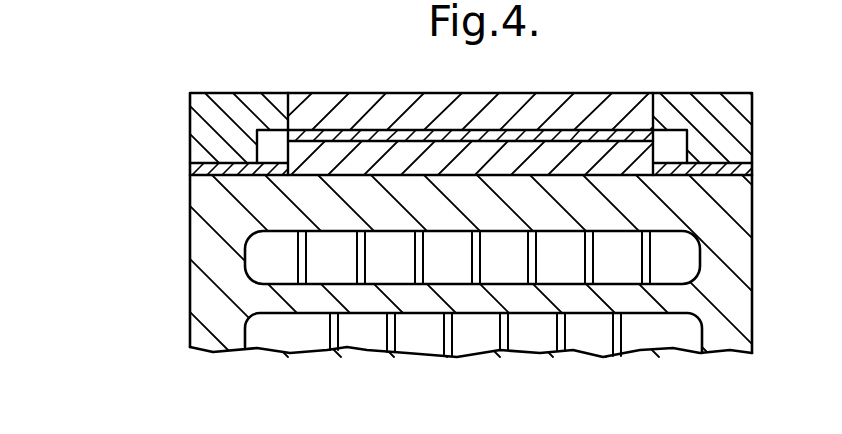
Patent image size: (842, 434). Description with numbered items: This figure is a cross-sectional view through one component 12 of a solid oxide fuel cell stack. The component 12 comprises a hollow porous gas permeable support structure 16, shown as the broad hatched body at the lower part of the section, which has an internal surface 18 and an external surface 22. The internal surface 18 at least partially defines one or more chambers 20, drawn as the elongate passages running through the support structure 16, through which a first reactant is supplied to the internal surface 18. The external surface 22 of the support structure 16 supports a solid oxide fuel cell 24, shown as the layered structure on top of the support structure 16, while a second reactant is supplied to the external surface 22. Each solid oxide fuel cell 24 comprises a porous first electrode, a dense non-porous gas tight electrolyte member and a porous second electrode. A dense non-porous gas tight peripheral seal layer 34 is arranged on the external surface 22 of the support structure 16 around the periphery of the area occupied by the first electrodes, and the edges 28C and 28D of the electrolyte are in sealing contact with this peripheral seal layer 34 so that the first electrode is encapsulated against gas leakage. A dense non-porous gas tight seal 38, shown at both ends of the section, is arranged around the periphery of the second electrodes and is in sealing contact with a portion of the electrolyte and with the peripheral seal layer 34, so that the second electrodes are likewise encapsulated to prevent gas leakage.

The component 12 is at (757, 93).
The hollow porous gas permeable support structure 16 is at (742, 212).
The internal surface 18 is at (560, 223).
The chambers 20 is at (472, 337).
The external surface 22 is at (398, 178).
The solid oxide fuel cell 24 is at (597, 88).
The edge of the electrolyte 28C is at (686, 146).
The edge of the electrolyte 28D is at (267, 145).
The dense non-porous gas tight peripheral seal layer 34 is at (197, 167).
The dense non-porous gas tight seal 38 is at (233, 93).